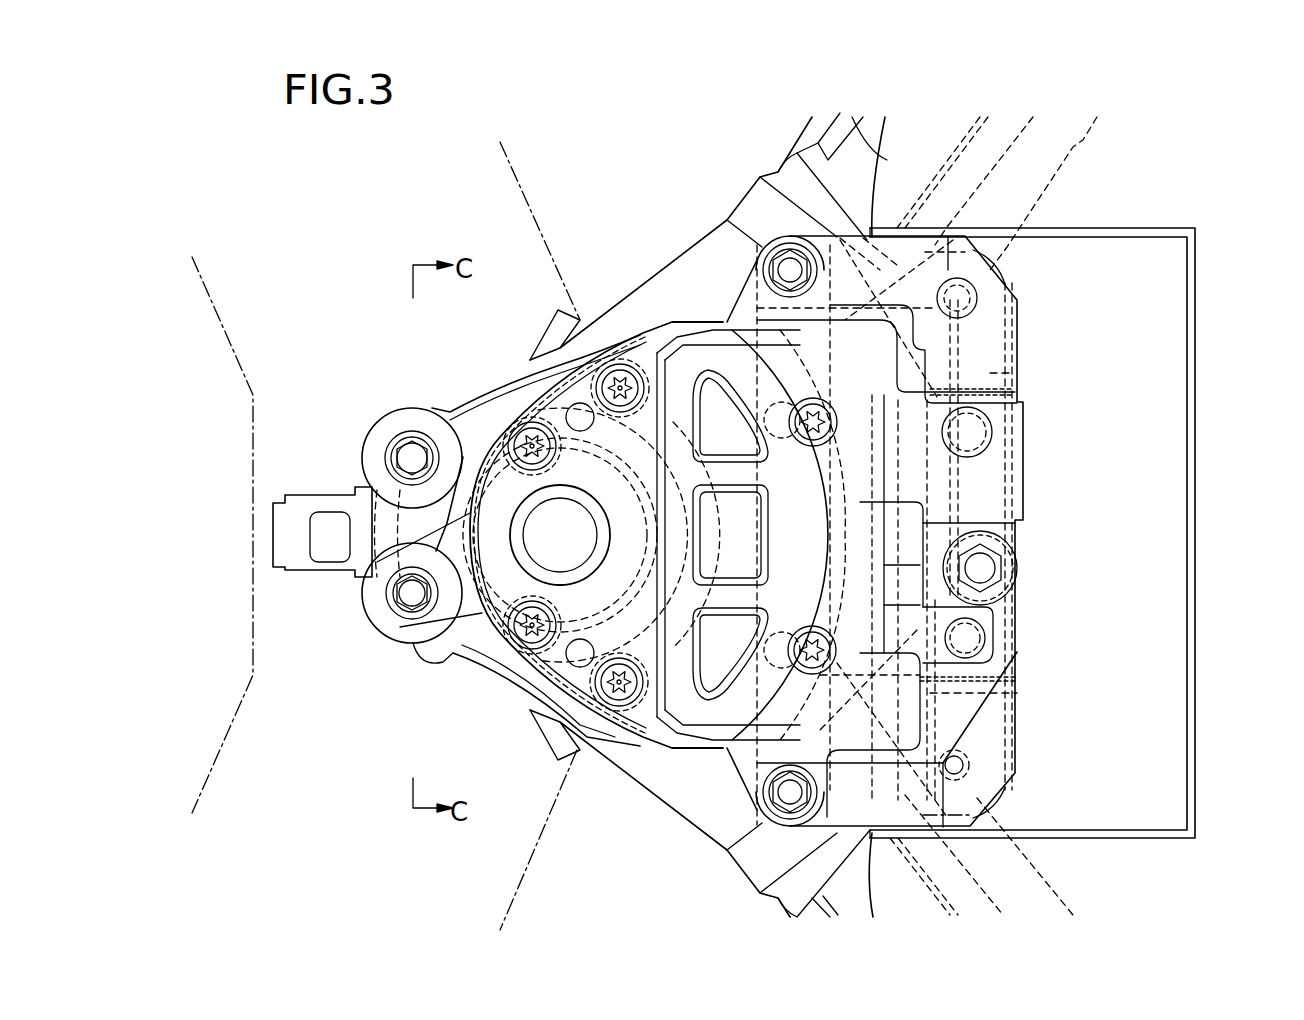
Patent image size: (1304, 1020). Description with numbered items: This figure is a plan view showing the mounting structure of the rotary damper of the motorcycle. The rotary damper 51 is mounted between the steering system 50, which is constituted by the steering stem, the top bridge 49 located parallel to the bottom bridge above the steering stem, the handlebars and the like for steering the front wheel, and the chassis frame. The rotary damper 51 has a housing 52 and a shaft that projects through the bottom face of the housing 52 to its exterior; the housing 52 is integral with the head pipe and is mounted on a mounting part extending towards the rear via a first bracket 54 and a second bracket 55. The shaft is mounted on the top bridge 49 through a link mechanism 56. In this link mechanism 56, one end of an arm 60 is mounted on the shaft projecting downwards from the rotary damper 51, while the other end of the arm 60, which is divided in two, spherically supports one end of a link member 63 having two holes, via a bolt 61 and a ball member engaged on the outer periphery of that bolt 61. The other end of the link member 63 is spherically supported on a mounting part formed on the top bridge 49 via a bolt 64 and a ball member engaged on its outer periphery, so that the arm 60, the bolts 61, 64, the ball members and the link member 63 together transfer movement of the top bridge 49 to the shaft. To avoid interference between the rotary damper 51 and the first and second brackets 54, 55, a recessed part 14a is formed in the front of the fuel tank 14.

The fuel tank 14 is at (862, 117).
The recessed part 14a is at (1185, 260).
The top bridge 49 is at (247, 327).
The steering system 50 is at (527, 182).
The rotary damper 51 is at (672, 302).
The housing 52 is at (508, 682).
The first bracket 54 is at (990, 352).
The second bracket 55 is at (990, 726).
The link mechanism 56 is at (433, 400).
The arm 60 is at (463, 640).
The bolt 61 is at (405, 597).
The link member 63 is at (363, 448).
The bolt 64 is at (412, 440).